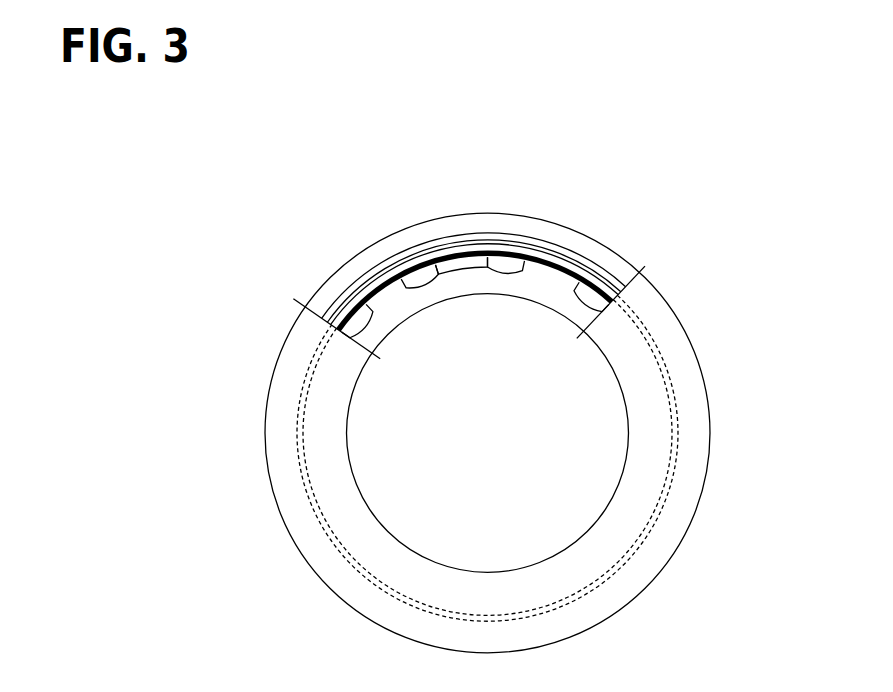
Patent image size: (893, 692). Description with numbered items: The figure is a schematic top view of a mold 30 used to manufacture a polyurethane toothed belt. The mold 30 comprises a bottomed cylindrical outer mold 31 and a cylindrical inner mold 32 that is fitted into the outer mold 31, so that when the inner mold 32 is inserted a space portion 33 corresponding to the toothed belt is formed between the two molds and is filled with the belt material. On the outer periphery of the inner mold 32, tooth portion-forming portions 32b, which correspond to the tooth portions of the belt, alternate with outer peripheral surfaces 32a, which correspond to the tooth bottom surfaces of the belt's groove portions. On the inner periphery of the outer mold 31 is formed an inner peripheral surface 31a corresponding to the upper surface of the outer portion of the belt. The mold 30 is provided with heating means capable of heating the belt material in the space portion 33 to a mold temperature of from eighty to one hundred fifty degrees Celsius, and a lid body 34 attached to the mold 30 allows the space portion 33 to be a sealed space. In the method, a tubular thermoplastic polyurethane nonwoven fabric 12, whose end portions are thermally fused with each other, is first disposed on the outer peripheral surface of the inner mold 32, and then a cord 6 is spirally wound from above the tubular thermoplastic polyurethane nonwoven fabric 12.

The mold 30 is at (694, 140).
The outer mold 31 is at (417, 233).
The inner peripheral surface 31a is at (363, 283).
The inner mold 32 is at (363, 342).
The outer peripheral surface 32a is at (468, 262).
The tooth portion-forming portion 32b is at (510, 274).
The space portion 33 is at (570, 247).
The lid body 34 is at (705, 415).
The tubular thermoplastic polyurethane nonwoven fabric 12 is at (593, 310).
The cord 6 is at (520, 235).